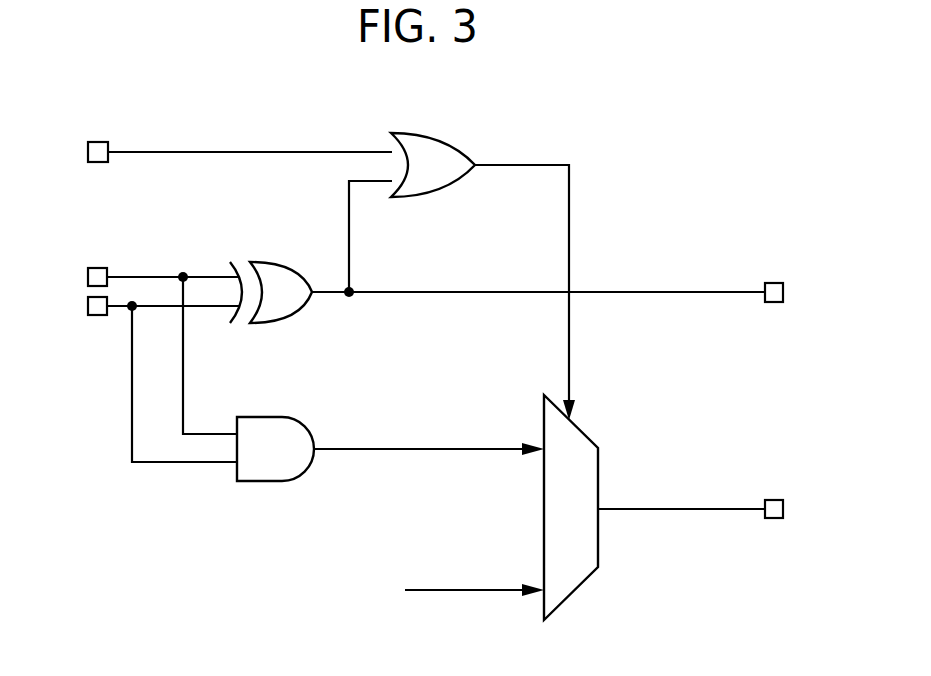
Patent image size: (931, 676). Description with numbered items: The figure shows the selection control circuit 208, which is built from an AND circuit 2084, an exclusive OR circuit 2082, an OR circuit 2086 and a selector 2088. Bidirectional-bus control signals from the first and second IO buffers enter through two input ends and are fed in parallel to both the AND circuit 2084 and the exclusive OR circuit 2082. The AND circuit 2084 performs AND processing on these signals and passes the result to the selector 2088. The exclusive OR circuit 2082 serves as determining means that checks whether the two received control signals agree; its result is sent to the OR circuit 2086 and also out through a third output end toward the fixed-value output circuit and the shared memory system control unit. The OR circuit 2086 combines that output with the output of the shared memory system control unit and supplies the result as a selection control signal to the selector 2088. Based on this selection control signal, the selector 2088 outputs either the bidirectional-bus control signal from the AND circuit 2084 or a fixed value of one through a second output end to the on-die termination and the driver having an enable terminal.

The selection control circuit 208 is at (645, 108).
The exclusive OR circuit 2082 is at (270, 262).
The AND circuit 2084 is at (270, 417).
The OR circuit 2086 is at (428, 133).
The selector 2088 is at (598, 468).